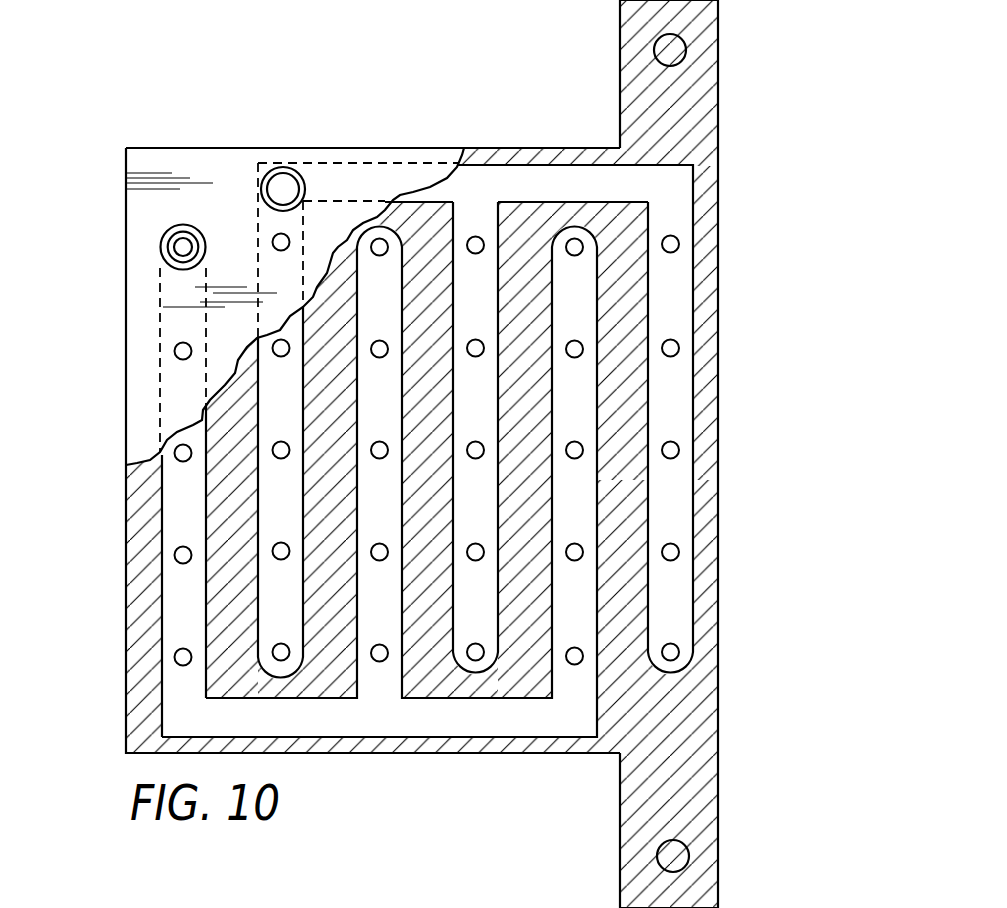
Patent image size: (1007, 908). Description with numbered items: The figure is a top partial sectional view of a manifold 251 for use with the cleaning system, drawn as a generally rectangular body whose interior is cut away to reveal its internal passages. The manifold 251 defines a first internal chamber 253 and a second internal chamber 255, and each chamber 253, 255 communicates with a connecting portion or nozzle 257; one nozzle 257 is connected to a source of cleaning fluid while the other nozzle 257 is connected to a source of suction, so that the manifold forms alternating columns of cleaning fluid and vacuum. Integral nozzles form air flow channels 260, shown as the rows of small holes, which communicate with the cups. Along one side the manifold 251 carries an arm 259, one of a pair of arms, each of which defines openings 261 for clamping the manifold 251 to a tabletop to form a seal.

The manifold 251 is at (118, 299).
The first internal chamber 253 is at (185, 511).
The second internal chamber 255 is at (282, 610).
The connecting portion or nozzle 257 is at (283, 167).
The arm 259 is at (618, 92).
The air flow channel 260 is at (672, 349).
The opening 261 is at (676, 52).